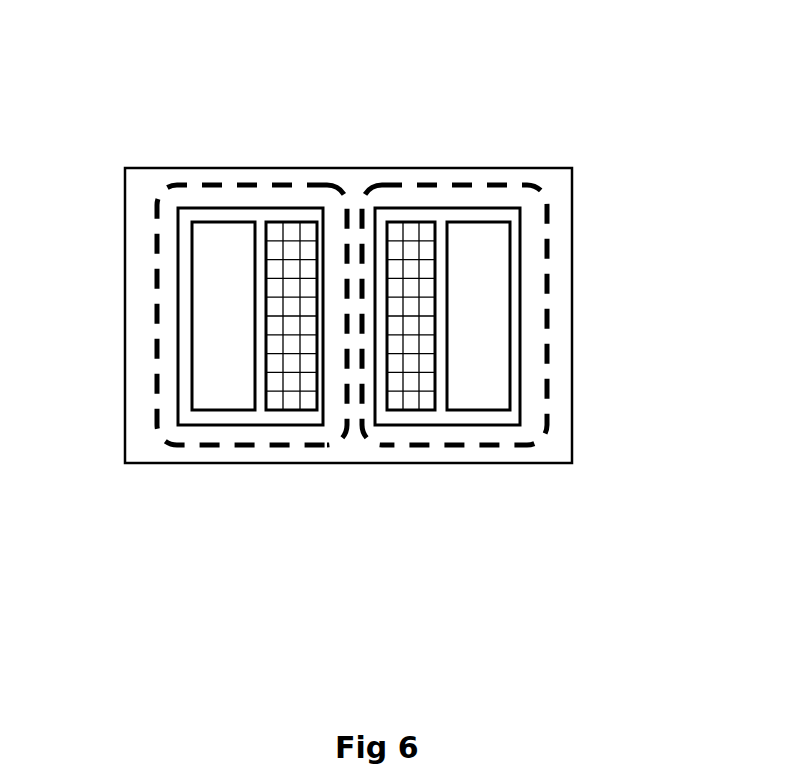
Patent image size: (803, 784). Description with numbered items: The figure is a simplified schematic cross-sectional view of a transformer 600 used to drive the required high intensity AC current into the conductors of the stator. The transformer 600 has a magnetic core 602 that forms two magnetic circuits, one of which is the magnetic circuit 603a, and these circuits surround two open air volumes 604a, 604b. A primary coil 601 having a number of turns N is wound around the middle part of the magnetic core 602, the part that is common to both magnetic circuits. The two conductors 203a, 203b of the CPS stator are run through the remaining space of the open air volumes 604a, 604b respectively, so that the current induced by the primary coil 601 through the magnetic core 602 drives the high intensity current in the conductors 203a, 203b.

The transformer 600 is at (624, 96).
The primary coil 601 is at (401, 402).
The magnetic core 602 is at (349, 220).
The magnetic circuit 603a is at (145, 182).
The open air volume 604a is at (235, 198).
The open air volume 604b is at (455, 197).
The conductor 203a is at (207, 401).
The conductor 203b is at (491, 399).